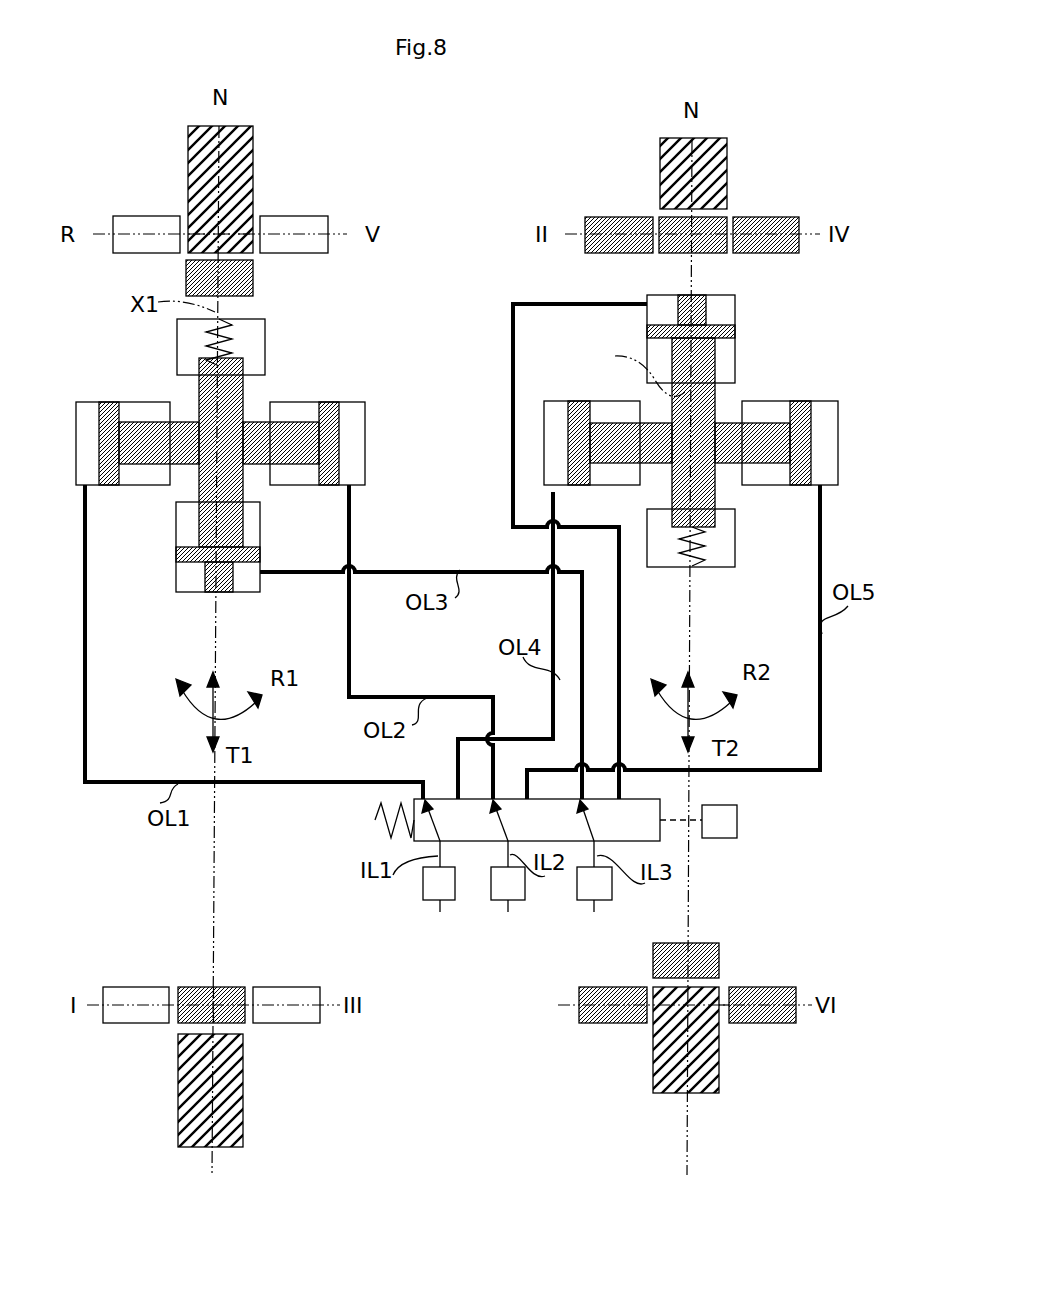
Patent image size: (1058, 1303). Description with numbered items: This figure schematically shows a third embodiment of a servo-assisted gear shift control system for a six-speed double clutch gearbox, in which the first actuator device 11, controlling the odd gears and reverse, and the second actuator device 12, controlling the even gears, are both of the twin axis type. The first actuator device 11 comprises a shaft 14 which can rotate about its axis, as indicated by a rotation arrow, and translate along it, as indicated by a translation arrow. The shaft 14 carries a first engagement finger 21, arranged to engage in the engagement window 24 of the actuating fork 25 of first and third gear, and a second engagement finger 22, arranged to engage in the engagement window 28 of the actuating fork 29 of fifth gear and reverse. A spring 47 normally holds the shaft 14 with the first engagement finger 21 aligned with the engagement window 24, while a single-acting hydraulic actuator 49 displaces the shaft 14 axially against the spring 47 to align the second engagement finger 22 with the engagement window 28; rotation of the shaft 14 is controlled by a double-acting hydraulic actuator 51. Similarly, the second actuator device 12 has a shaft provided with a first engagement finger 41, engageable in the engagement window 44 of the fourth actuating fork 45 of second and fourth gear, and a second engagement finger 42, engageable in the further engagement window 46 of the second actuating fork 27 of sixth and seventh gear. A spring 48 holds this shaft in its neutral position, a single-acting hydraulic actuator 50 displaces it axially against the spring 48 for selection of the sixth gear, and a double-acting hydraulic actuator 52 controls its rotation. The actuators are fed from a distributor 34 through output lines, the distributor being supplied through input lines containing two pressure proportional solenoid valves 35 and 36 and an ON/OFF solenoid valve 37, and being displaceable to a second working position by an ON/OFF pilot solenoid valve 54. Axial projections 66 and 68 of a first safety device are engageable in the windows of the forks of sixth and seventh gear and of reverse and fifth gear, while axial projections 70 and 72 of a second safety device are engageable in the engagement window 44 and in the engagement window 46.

The first actuator device 11 is at (236, 487).
The second actuator device 12 is at (702, 434).
The shaft 14 is at (205, 405).
The first engagement finger 21 is at (222, 1000).
The second engagement finger 22 is at (240, 280).
The engagement window 24 is at (175, 997).
The actuating fork 25 is at (115, 996).
The second actuating fork 27 is at (597, 1018).
The engagement window 28 is at (256, 226).
The actuating fork 29 is at (142, 222).
The distributor 34 is at (553, 834).
The pressure proportional solenoid valve 35 is at (439, 876).
The pressure proportional solenoid valve 36 is at (508, 876).
The ON/OFF solenoid valve 37 is at (594, 876).
The first engagement finger 41 is at (708, 247).
The second engagement finger 42 is at (702, 950).
The engagement window 44 is at (628, 223).
The fourth actuating fork 45 is at (770, 227).
The engagement window 46 is at (724, 1000).
The spring 47 is at (226, 339).
The spring 48 is at (702, 561).
The single-acting hydraulic actuator 49 is at (243, 562).
The single-acting hydraulic actuator 50 is at (727, 331).
The double-acting hydraulic actuator 51 is at (332, 412).
The double-acting hydraulic actuator 52 is at (800, 408).
The ON/OFF pilot solenoid valve 54 is at (719, 821).
The axial projection 66 is at (240, 1114).
The axial projection 68 is at (200, 163).
The axial projection 70 is at (717, 153).
The axial projection 72 is at (700, 1062).